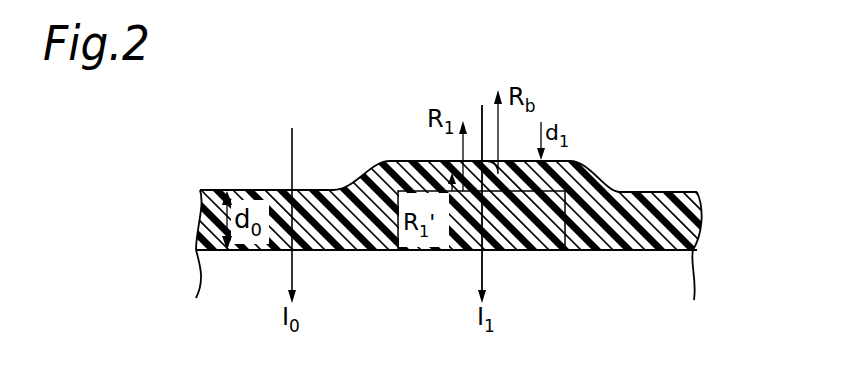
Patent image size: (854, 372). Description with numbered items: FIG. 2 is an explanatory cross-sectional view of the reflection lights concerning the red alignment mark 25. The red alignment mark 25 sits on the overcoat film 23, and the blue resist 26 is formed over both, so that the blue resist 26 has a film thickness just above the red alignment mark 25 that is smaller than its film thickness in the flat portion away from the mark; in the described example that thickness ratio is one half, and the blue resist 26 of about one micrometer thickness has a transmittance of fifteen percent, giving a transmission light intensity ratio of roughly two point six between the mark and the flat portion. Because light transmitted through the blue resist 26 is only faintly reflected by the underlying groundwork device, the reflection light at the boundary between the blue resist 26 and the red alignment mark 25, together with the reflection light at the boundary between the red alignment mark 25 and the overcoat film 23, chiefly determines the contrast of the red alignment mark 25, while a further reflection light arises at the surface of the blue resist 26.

The overcoat film 23 is at (685, 278).
The red alignment mark 25 is at (532, 250).
The blue resist 26 is at (688, 205).